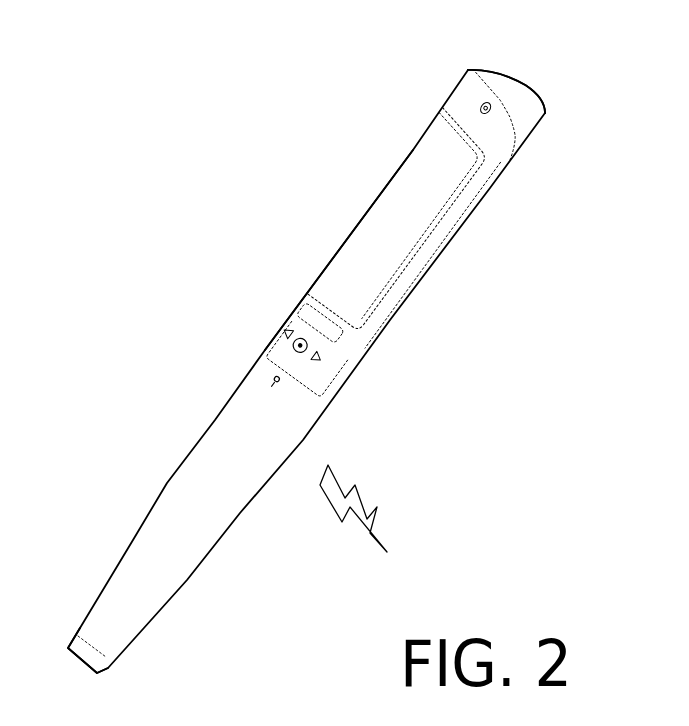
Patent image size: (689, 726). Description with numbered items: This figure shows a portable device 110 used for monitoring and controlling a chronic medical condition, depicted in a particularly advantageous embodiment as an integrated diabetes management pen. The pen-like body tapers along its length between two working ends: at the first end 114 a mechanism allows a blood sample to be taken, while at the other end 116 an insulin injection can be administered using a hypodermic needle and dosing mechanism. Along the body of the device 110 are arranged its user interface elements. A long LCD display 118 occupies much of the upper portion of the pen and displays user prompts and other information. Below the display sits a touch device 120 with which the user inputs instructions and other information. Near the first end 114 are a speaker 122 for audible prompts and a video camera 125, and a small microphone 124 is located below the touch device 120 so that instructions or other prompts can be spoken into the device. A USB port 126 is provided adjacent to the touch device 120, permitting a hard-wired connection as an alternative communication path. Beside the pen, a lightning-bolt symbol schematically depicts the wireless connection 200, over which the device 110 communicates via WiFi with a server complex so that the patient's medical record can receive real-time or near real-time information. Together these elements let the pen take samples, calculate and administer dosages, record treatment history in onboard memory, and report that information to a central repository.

The device 110 is at (164, 476).
The first end 114 is at (548, 114).
The other end 116 is at (75, 631).
The LCD display 118 is at (369, 207).
The touch device 120 is at (296, 312).
The speaker 122 is at (438, 106).
The microphone 124 is at (290, 385).
The video camera 125 is at (512, 152).
The USB port 126 is at (312, 290).
The wireless connection 200 is at (360, 506).